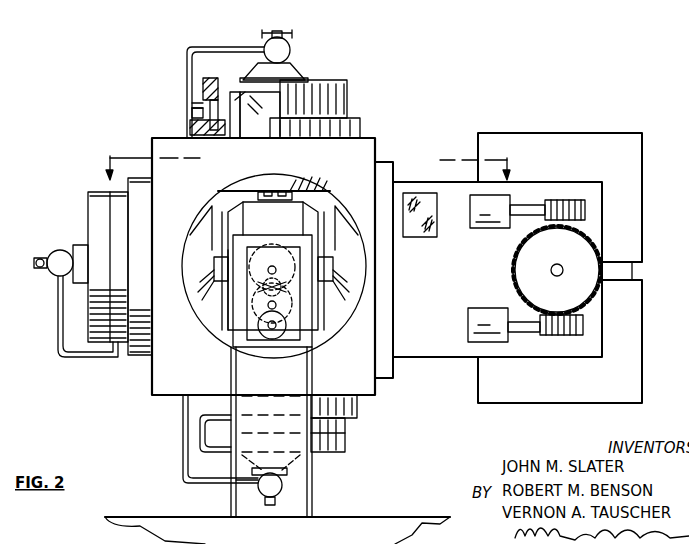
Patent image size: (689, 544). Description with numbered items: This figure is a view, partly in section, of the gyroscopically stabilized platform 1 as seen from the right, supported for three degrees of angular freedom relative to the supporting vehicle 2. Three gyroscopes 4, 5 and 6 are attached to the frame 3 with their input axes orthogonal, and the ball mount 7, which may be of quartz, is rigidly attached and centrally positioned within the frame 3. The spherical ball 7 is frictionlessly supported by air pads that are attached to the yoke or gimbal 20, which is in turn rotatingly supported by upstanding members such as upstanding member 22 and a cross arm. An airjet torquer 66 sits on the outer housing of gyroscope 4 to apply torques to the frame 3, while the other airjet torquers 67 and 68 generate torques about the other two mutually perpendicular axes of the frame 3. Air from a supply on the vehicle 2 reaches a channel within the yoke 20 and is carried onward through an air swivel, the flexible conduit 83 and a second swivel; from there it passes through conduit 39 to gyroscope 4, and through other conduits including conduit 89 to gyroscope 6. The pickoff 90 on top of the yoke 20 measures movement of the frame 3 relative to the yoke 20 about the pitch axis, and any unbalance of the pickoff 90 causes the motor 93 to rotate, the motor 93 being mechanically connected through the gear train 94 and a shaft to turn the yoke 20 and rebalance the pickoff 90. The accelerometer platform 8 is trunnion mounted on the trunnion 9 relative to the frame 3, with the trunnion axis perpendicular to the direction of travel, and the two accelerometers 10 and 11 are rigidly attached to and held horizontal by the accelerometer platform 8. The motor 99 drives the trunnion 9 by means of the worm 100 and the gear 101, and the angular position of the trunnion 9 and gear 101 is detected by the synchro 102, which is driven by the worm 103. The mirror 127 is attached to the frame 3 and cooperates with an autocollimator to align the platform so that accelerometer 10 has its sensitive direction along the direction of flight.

The gyroscopically stabilized platform 1 is at (382, 130).
The supporting vehicle 2 is at (382, 518).
The frame 3 is at (118, 412).
The gyroscope 4 is at (325, 86).
The gyroscope 5 is at (96, 207).
The gyroscope 6 is at (328, 450).
The ball mount 7 is at (326, 262).
The accelerometer platform 8 is at (626, 270).
The trunnion 9 is at (556, 277).
The accelerometer 10 is at (560, 197).
The accelerometer 11 is at (560, 341).
The yoke or gimbal 20 is at (310, 226).
The upstanding member 22 is at (313, 390).
The conduit 39 is at (189, 128).
The airjet torquer 66 is at (291, 47).
The airjet torquer 67 is at (58, 254).
The airjet torquer 68 is at (272, 491).
The flexible conduit 83 is at (215, 348).
The conduit 89 is at (212, 322).
The pickoff 90 is at (290, 194).
The motor 93 is at (283, 343).
The gear train 94 is at (242, 343).
The motor 99 is at (478, 316).
The worm 100 is at (575, 336).
The gear 101 is at (557, 270).
The synchro 102 is at (500, 229).
The worm 103 is at (570, 204).
The mirror 127 is at (414, 238).